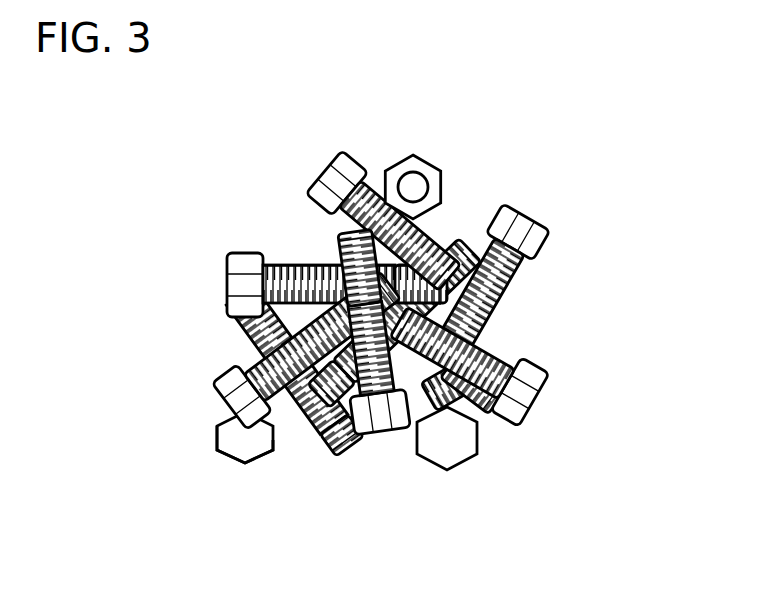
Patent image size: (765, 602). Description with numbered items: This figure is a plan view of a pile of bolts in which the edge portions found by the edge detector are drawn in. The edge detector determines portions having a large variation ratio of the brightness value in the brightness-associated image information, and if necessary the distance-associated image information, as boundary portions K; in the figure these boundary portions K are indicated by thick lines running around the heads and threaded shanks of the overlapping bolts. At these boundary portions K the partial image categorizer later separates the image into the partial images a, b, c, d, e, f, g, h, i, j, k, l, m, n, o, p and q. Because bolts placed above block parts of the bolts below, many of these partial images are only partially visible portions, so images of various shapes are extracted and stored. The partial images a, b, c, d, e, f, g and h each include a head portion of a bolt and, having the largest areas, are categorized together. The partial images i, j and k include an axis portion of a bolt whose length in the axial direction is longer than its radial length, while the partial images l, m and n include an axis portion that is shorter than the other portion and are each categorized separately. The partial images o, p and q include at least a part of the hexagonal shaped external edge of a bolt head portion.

The partial image a is at (220, 374).
The partial image b is at (241, 255).
The partial image c is at (328, 176).
The partial image d is at (520, 215).
The partial image e is at (540, 363).
The partial image f is at (383, 407).
The partial image g is at (462, 240).
The partial image h is at (345, 368).
The partial image i is at (248, 334).
The partial image j is at (336, 248).
The partial image k is at (407, 280).
The partial image l is at (490, 408).
The partial image m is at (412, 360).
The partial image n is at (343, 367).
The partial image o is at (427, 157).
The partial image p is at (437, 453).
The partial image q is at (222, 437).
The boundary portions K is at (350, 160).